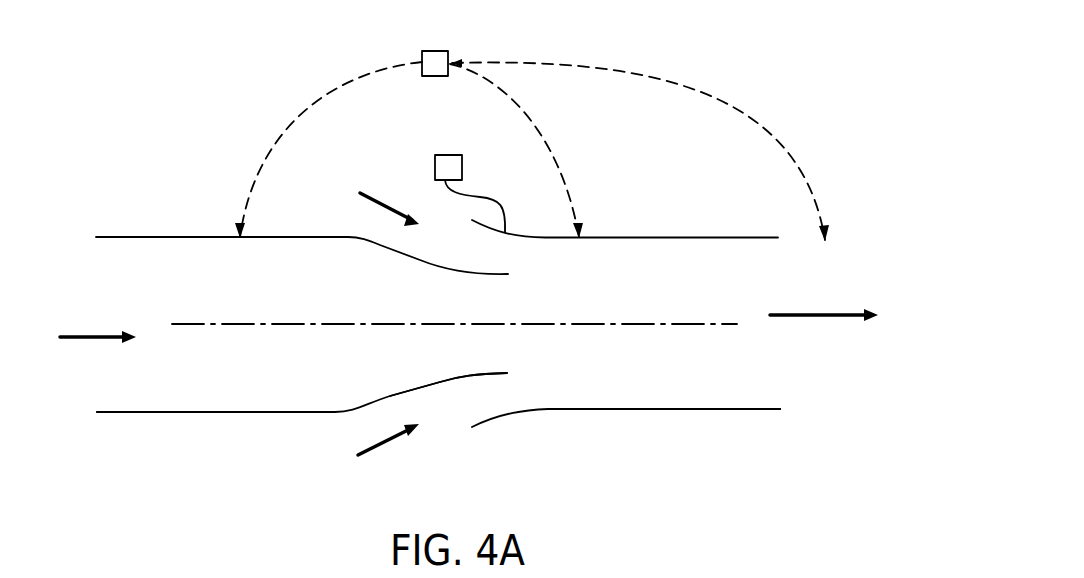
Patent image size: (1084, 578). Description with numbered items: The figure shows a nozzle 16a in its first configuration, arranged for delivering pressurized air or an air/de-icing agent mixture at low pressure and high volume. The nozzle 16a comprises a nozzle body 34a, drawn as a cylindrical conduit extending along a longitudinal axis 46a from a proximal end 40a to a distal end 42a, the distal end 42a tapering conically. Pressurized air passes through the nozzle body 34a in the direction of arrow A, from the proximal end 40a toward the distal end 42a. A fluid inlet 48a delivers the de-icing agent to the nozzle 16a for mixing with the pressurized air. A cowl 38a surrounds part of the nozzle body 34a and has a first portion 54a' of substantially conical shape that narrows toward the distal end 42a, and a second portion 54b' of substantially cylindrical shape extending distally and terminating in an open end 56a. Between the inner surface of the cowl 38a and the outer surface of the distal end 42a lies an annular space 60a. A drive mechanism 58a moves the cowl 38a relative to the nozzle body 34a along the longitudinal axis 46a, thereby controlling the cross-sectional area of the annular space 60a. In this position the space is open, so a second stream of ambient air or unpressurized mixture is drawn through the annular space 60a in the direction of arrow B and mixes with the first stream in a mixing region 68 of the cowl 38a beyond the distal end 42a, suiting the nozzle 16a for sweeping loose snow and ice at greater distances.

The nozzle 16a is at (789, 129).
The fluid inlet 48a is at (433, 66).
The drive mechanism 58a is at (447, 168).
The mixing region 68 is at (641, 265).
The annular space 60a is at (486, 253).
The longitudinal axis 46a is at (720, 325).
The nozzle body 34a is at (237, 426).
The proximal end 40a is at (108, 417).
The distal end 42a is at (468, 380).
The first portion 54a' is at (512, 443).
The cowl 38a is at (670, 414).
The second portion 54b' is at (743, 438).
The open end 56a is at (777, 392).
The arrow A is at (92, 335).
The arrow B is at (370, 198).